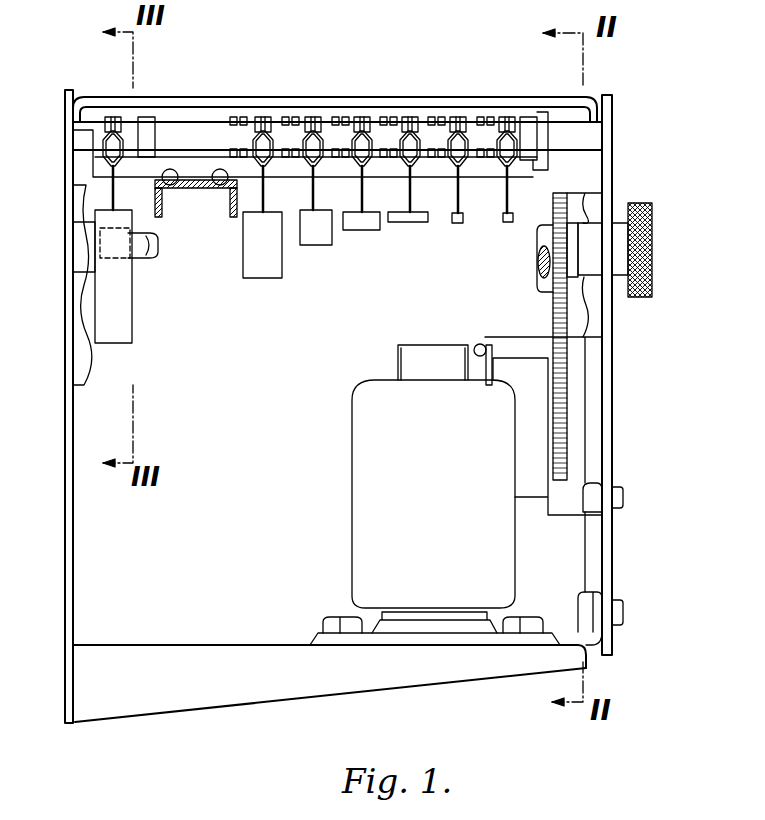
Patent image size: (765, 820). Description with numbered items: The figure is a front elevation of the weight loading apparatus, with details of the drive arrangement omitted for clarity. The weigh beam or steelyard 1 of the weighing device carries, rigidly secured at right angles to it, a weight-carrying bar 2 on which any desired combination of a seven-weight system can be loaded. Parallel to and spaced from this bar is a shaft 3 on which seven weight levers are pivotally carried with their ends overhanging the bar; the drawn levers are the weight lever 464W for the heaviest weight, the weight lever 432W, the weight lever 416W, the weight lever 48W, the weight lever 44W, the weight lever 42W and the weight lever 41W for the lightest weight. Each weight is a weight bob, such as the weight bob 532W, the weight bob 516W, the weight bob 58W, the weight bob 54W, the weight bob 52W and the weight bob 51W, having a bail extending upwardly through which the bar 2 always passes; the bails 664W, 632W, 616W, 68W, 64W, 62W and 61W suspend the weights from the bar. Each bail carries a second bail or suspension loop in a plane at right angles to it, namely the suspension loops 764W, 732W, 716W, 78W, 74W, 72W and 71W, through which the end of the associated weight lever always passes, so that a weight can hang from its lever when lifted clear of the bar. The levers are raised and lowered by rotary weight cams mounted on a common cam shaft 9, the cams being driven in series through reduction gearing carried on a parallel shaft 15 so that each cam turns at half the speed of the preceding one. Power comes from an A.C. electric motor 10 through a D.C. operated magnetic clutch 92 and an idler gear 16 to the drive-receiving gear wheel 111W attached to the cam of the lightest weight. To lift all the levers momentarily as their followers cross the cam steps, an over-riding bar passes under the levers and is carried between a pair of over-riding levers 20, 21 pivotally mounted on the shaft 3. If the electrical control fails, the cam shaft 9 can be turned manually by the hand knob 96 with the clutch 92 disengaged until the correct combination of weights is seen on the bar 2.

The weigh beam or steelyard 1 is at (225, 196).
The weight-carrying bar 2 is at (124, 170).
The shaft 3 is at (183, 132).
The cam shaft 9 is at (155, 242).
The A.C. electric motor 10 is at (446, 485).
The shaft 15 is at (140, 255).
The idler gear 16 is at (565, 362).
The over-riding lever 20 is at (532, 125).
The over-riding lever 21 is at (147, 128).
The magnetic clutch 92 is at (535, 488).
The hand knob 96 is at (640, 297).
The suspension loop 764W is at (106, 140).
The weight lever 464W is at (118, 142).
The bail 664W is at (103, 200).
The weight lever 432W is at (267, 127).
The suspension loop 732W is at (272, 168).
The bail 632W is at (260, 207).
The weight 532W is at (252, 248).
The weight lever 416W is at (313, 130).
The suspension loop 716W is at (321, 168).
The bail 616W is at (308, 217).
The weight 516W is at (313, 240).
The weight lever 48W is at (363, 130).
The suspension loop 78W is at (369, 168).
The bail 68W is at (367, 225).
The weight 58W is at (368, 225).
The weight lever 44W is at (410, 131).
The suspension loop 74W is at (417, 168).
The bail 64W is at (402, 222).
The weight 54W is at (425, 222).
The weight lever 42W is at (458, 130).
The suspension loop 72W is at (466, 168).
The bail 62W is at (453, 223).
The weight 52W is at (464, 220).
The weight lever 41W is at (508, 130).
The suspension loop 71W is at (513, 140).
The bail 61W is at (509, 178).
The weight 51W is at (512, 225).
The drive-receiving gear wheel 111W is at (555, 293).